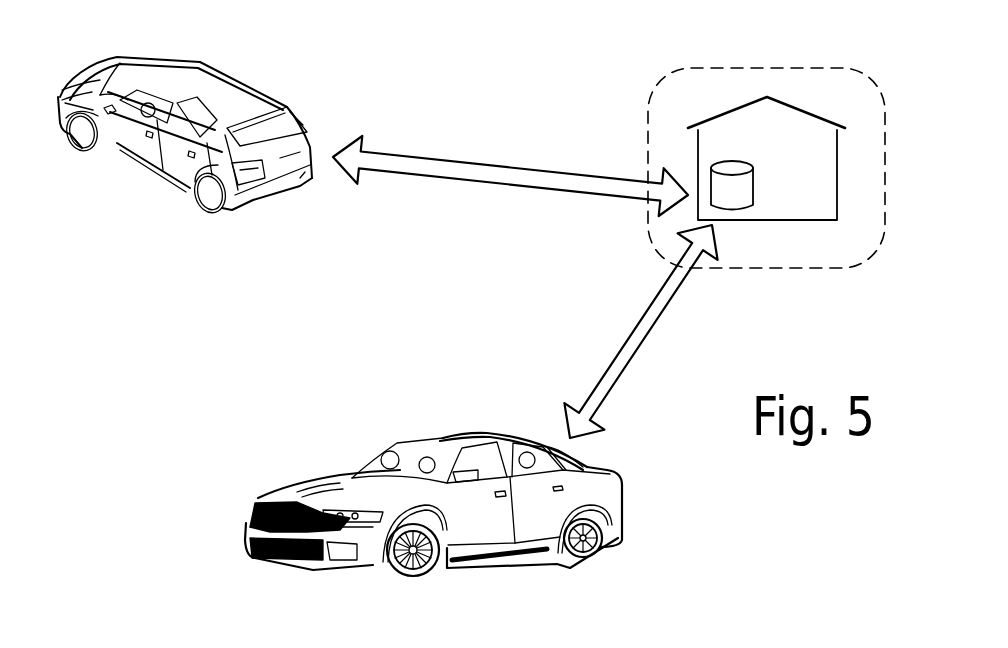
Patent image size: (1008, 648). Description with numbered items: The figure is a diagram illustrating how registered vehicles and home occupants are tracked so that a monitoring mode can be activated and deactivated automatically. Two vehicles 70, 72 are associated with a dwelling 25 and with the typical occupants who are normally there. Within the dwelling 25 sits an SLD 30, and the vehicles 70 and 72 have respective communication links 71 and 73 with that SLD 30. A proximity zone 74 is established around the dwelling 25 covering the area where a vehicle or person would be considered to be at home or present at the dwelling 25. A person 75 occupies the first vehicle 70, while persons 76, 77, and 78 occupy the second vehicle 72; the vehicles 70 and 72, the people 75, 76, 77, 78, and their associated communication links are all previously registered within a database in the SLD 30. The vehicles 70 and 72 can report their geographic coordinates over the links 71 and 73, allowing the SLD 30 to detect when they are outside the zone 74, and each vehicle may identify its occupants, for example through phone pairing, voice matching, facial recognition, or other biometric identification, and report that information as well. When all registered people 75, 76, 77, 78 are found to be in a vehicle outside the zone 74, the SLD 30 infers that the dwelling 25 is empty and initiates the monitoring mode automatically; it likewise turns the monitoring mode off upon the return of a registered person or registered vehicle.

The vehicle 70 is at (140, 170).
The person 75 is at (146, 103).
The communication link 71 is at (465, 160).
The communication link 73 is at (618, 348).
The proximity zone 74 is at (692, 68).
The dwelling 25 is at (837, 162).
The SLD 30 is at (747, 187).
The vehicle 72 is at (283, 485).
The person 76 is at (382, 453).
The person 77 is at (426, 457).
The person 78 is at (525, 452).